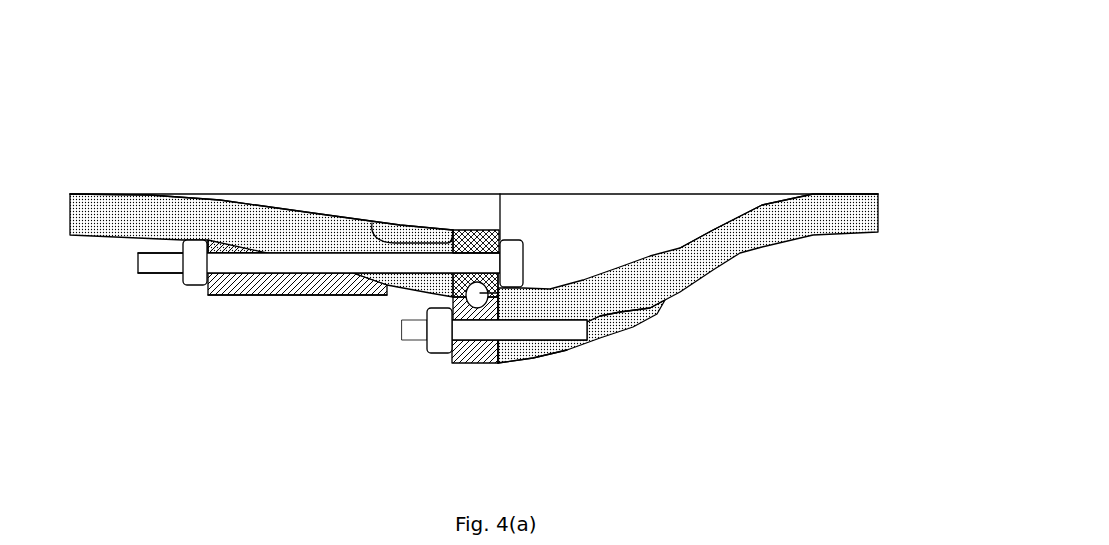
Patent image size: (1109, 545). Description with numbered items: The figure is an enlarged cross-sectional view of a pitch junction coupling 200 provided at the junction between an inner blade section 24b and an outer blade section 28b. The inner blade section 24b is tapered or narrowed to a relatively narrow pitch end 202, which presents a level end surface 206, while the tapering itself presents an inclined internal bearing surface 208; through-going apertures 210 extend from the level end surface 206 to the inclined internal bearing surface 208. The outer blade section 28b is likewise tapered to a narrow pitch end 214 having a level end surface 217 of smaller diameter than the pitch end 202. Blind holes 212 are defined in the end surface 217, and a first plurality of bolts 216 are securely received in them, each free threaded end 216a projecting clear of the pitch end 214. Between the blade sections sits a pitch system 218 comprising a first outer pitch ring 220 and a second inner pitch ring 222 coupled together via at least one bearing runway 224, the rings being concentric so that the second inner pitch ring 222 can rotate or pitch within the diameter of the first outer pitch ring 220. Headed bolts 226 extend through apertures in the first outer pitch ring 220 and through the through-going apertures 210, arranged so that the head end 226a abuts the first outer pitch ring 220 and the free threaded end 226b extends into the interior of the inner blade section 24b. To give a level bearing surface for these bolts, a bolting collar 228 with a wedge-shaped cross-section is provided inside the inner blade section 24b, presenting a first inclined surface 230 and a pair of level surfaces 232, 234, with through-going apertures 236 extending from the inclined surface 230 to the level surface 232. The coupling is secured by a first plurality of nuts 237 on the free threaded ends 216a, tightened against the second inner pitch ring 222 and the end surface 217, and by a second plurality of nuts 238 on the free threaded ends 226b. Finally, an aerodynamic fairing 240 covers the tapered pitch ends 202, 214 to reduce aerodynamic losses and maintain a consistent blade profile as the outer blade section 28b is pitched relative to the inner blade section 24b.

The pitch junction coupling 200 is at (290, 85).
The inner blade section 24b is at (193, 210).
The first inclined surface 230 is at (220, 242).
The second plurality of nuts 238 is at (190, 255).
The inclined internal bearing surface 208 is at (237, 243).
The headed bolts 226 is at (340, 263).
The level end surface 206 is at (372, 223).
The pitch end 202 is at (450, 182).
The pitch system 218 is at (480, 243).
The first outer pitch ring 220 is at (510, 253).
The head end 226a is at (500, 240).
The aerodynamic fairing 240 is at (710, 193).
The bearing runway 224 is at (523, 288).
The free threaded end 226b is at (150, 263).
The level surface 232 is at (185, 287).
The through-going apertures 236 is at (277, 295).
The level surface 234 is at (230, 293).
The bolting collar 228 is at (310, 283).
The through-going apertures 210 is at (399, 275).
The free threaded end 216a is at (410, 333).
The first plurality of nuts 237 is at (440, 353).
The second inner pitch ring 222 is at (468, 352).
The level end surface 217 is at (518, 347).
The pitch end 214 is at (533, 385).
The blind holes 212 is at (570, 345).
The first plurality of bolts 216 is at (570, 332).
The outer blade section 28b is at (670, 283).